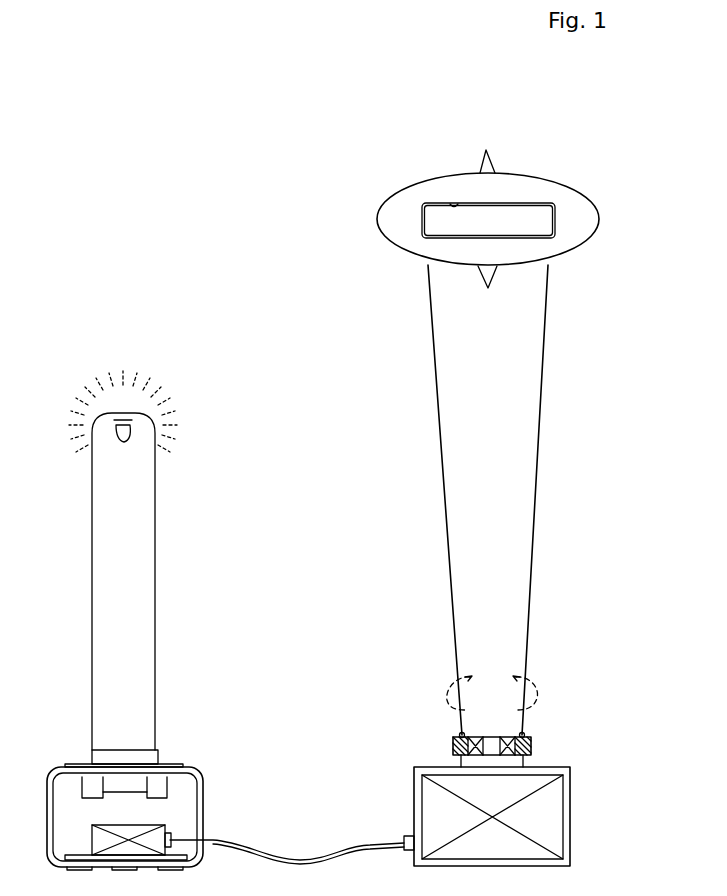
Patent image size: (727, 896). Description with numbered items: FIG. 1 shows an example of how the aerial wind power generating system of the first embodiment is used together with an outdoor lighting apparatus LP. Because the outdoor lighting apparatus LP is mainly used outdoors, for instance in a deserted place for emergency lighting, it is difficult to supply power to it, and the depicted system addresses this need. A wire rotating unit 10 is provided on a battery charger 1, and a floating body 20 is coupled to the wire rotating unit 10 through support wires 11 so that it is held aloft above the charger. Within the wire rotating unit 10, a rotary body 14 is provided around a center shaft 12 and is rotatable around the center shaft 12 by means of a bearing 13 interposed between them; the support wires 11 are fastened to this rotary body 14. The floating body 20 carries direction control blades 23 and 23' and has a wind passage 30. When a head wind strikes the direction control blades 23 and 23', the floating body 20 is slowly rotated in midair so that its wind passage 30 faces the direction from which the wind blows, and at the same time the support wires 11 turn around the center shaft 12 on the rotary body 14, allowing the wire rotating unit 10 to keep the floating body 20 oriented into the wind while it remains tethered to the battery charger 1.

The battery charger 1 is at (423, 808).
The wire rotating unit 10 is at (440, 682).
The support wires 11 is at (440, 450).
The center shaft 12 is at (460, 734).
The bearing 13 is at (524, 733).
The rotary body 14 is at (450, 745).
The floating body 20 is at (385, 209).
The direction control blade 23 is at (453, 144).
The direction control blade 23' is at (475, 318).
The wind passage 30 is at (446, 205).
The outdoor lighting apparatus LP is at (155, 580).